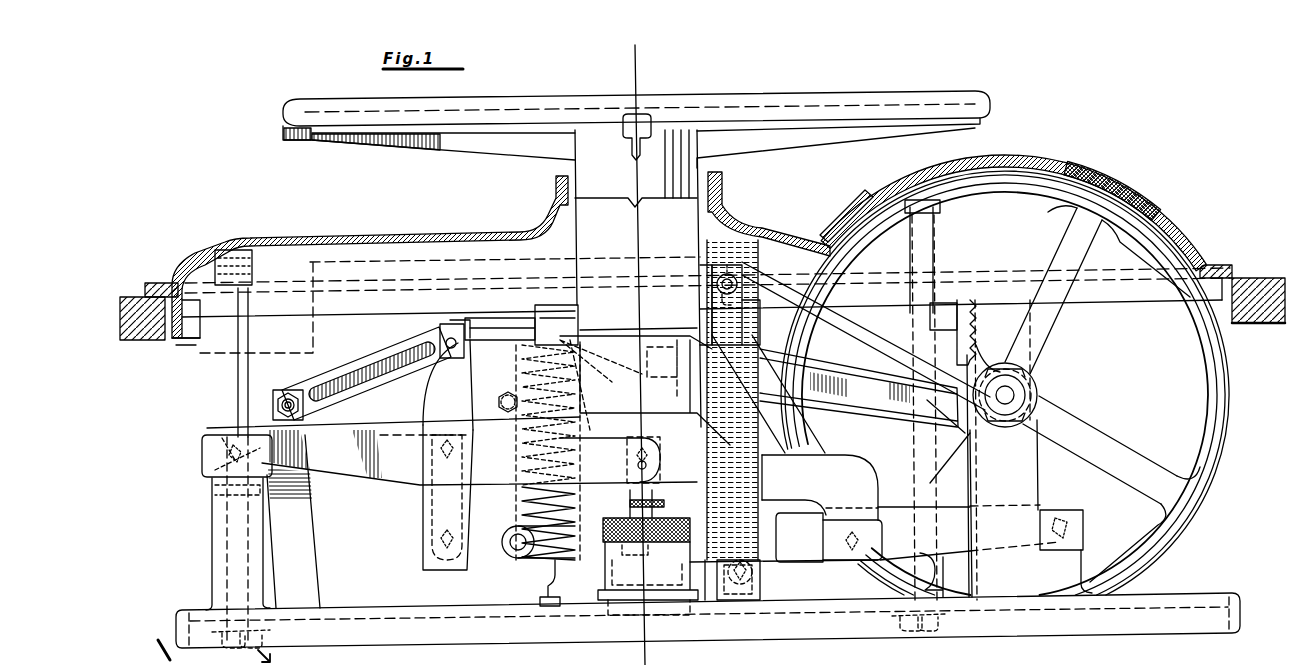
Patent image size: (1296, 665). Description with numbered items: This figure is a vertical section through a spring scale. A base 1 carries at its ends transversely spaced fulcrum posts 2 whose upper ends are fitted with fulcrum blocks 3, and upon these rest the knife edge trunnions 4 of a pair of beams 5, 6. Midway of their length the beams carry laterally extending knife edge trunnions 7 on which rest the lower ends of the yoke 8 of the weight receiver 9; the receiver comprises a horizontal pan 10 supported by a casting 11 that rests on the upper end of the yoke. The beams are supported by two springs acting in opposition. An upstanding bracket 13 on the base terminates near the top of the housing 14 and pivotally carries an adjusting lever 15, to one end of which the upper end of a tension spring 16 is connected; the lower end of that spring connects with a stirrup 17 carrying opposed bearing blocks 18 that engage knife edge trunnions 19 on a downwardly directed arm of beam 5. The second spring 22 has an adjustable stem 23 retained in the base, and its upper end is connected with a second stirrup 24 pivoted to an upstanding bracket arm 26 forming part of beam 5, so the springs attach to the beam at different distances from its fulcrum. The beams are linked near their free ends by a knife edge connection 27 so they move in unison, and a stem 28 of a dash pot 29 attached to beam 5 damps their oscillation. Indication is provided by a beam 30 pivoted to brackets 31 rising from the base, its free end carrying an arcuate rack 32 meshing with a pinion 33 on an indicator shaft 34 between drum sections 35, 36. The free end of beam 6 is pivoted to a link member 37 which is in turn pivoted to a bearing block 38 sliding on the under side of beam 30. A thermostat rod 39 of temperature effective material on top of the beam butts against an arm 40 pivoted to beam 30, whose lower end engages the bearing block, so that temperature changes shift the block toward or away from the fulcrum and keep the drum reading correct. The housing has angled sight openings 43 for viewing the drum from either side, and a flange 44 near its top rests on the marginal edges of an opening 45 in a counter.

The base 1 is at (455, 630).
The fulcrum posts 2 is at (1210, 249).
The fulcrum blocks 3 is at (642, 58).
The knife edge trunnions 4 is at (202, 480).
The beam 5 is at (397, 476).
The beam 6 is at (900, 545).
The knife edge trunnions 7 is at (420, 484).
The yoke 8 is at (645, 279).
The weight receiver 9 is at (712, 165).
The horizontal pan or plate 10 is at (830, 96).
The casting 11 is at (585, 149).
The upstanding bracket 13 is at (746, 303).
The housing 14 is at (440, 236).
The adjusting lever 15 is at (742, 280).
The tension spring 16 is at (748, 352).
The stirrup 17 is at (762, 584).
The bearing blocks 18 is at (747, 595).
The knife edge trunnions 19 is at (728, 571).
The second spring 22 is at (576, 506).
The adjustable stem 23 is at (560, 588).
The second stirrup 24 is at (549, 305).
The upstanding bracket arm 26 is at (582, 422).
The knife edge connection 27 is at (664, 502).
The stem 28 is at (665, 482).
The dash pot 29 is at (672, 548).
The beam 30 is at (396, 384).
The brackets 31 is at (305, 543).
The arcuate rack 32 is at (972, 343).
The pinion 33 is at (1003, 432).
The indicator shaft 34 is at (1010, 395).
The drum section 35 is at (1230, 384).
The drum section 36 is at (214, 468).
The link member 37 is at (514, 506).
The bearing block 38 is at (482, 392).
The rod 39 is at (513, 325).
The arm 40 is at (442, 329).
The sight openings 43 is at (848, 215).
The flange 44 is at (170, 284).
The opening 45 is at (178, 333).